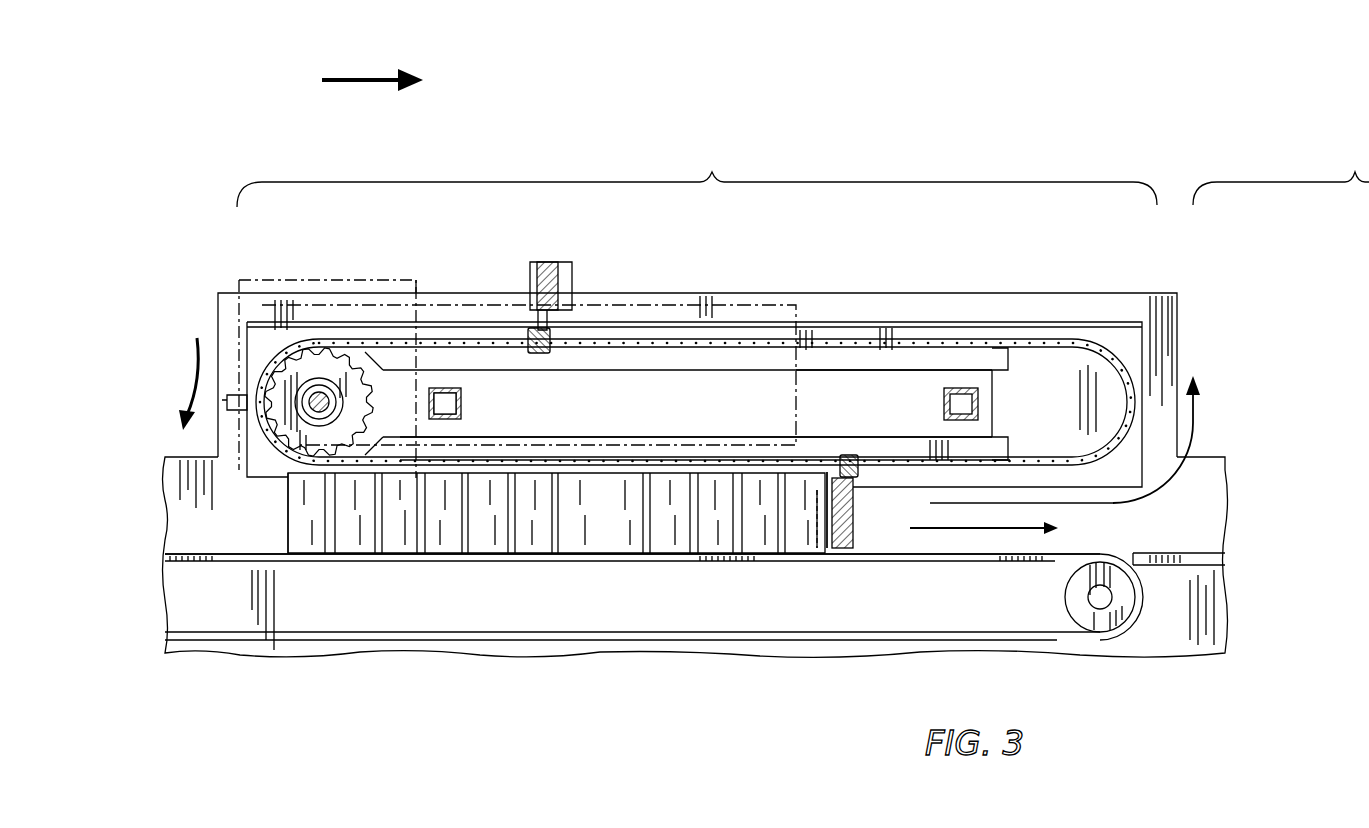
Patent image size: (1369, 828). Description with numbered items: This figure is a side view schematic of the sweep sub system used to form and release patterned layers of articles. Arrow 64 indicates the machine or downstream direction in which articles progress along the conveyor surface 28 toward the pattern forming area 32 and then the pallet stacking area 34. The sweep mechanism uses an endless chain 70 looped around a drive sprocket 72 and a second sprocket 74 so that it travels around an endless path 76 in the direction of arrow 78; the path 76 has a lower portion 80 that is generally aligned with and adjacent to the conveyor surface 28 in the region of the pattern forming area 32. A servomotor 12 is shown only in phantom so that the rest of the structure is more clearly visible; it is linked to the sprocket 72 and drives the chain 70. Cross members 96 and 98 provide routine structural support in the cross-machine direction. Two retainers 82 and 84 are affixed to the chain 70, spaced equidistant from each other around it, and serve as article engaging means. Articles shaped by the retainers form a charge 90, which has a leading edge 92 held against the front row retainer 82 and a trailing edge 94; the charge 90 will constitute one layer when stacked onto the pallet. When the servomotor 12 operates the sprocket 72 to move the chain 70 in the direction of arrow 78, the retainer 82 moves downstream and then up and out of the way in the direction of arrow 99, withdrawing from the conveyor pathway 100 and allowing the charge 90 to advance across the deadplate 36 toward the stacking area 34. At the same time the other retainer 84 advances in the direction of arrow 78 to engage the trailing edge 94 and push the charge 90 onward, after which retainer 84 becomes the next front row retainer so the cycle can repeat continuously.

The servomotor 12 is at (682, 312).
The conveyor surface 28 is at (395, 555).
The pattern forming area 32 is at (715, 158).
The pallet stacking area 34 is at (1355, 158).
The deadplate 36 is at (968, 548).
The arrow 64 is at (368, 78).
The endless chain 70 is at (357, 340).
The sprocket 72 is at (328, 374).
The sprocket 74 is at (1081, 392).
The endless path 76 is at (886, 355).
The arrow 78 is at (178, 375).
The lower portion 80 is at (740, 453).
The retainer 82 is at (853, 535).
The retainer 84 is at (540, 263).
The charge 90 is at (622, 520).
The leading edge 92 is at (845, 542).
The trailing edge 94 is at (288, 518).
The cross member 96 is at (462, 403).
The cross member 98 is at (944, 403).
The arrow 99 is at (1198, 424).
The conveyor pathway 100 is at (1036, 522).